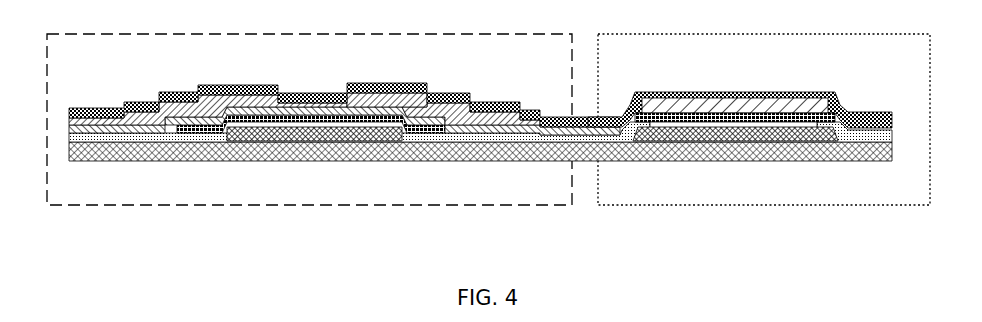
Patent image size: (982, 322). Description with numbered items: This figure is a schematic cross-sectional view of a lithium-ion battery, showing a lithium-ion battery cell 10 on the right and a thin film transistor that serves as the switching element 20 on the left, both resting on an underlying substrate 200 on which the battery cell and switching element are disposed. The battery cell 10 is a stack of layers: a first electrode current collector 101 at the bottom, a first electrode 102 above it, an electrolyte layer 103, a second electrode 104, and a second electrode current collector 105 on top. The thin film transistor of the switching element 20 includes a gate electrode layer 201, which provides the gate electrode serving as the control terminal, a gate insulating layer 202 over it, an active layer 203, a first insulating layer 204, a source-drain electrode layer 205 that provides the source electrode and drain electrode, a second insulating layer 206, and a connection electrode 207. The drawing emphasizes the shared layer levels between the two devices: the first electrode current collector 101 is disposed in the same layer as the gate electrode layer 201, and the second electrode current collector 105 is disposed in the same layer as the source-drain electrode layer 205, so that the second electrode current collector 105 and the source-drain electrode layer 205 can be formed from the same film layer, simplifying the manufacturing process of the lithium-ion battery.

The lithium-ion battery cell 10 is at (764, 119).
The switching element 20 is at (309, 119).
The first electrode current collector 101 is at (792, 132).
The first electrode 102 is at (662, 125).
The electrolyte layer 103 is at (710, 118).
The second electrode 104 is at (758, 112).
The second electrode current collector 105 is at (785, 102).
The substrate 200 is at (493, 153).
The gate electrode layer 201 is at (343, 132).
The gate insulating layer 202 is at (210, 137).
The active layer 203 is at (190, 130).
The first insulating layer 204 is at (126, 128).
The source-drain electrode layer 205 is at (382, 98).
The second insulating layer 206 is at (465, 115).
The connection electrode 207 is at (437, 97).